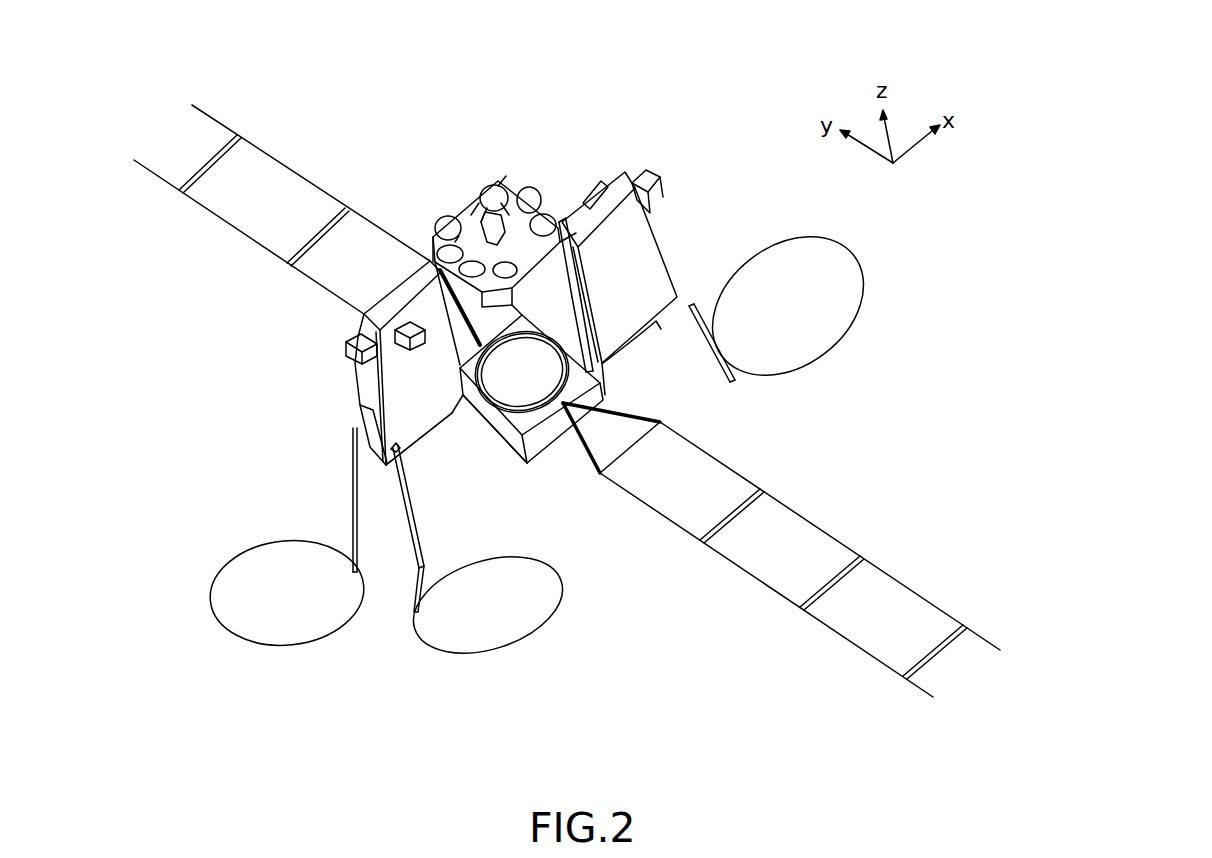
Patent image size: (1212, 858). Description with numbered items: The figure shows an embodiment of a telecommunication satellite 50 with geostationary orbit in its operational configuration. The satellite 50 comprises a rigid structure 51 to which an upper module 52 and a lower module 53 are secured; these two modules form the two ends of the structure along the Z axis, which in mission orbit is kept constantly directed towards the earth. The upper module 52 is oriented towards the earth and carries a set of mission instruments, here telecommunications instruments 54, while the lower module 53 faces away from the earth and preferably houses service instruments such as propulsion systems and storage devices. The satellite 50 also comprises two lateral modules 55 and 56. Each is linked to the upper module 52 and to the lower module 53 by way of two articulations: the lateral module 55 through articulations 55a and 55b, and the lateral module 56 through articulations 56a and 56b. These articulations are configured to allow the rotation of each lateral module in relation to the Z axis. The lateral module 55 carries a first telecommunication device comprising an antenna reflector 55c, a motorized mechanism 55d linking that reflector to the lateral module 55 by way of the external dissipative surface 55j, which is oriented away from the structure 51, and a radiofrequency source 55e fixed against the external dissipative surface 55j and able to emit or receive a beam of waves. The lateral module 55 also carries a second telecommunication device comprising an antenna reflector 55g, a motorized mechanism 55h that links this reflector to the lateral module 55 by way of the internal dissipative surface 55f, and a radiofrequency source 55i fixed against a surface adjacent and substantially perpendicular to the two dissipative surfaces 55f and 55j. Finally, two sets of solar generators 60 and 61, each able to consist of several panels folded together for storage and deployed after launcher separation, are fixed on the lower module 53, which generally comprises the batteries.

The telecommunication satellite 50 is at (512, 78).
The rigid structure 51 is at (520, 200).
The upper module 52 is at (458, 212).
The lower module 53 is at (538, 430).
The telecommunications instruments 54 is at (446, 224).
The lateral module 55 is at (378, 291).
The articulation 55a is at (428, 256).
The articulation 55b is at (467, 407).
The antenna reflector 55c is at (520, 618).
The motorized mechanism 55d is at (412, 553).
The radiofrequency source 55e is at (410, 350).
The internal dissipative surface 55f is at (355, 380).
The antenna reflector 55g is at (250, 568).
The motorized mechanism 55h is at (352, 528).
The radiofrequency source 55i is at (345, 347).
The external dissipative surface 55j is at (412, 422).
The lateral module 56 is at (613, 187).
The articulation 56a is at (563, 218).
The articulation 56b is at (605, 365).
The set of solar generators 60 is at (823, 550).
The set of solar generators 61 is at (263, 180).